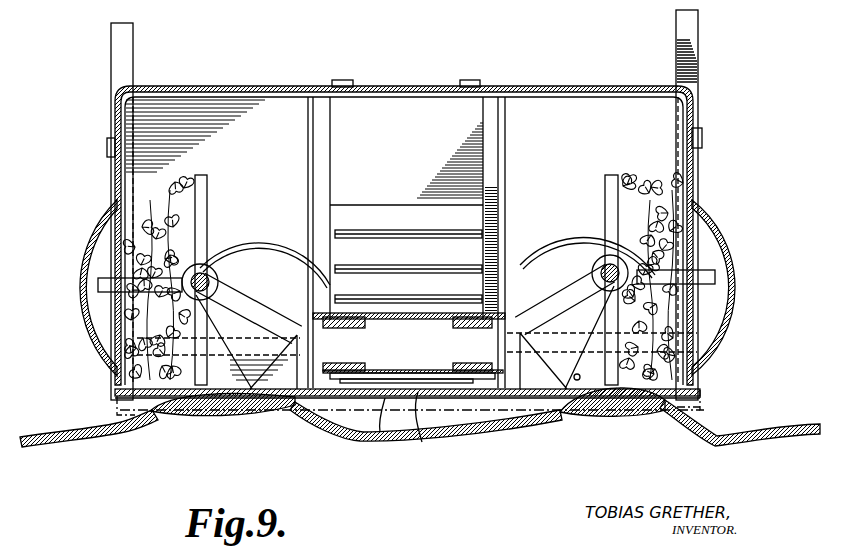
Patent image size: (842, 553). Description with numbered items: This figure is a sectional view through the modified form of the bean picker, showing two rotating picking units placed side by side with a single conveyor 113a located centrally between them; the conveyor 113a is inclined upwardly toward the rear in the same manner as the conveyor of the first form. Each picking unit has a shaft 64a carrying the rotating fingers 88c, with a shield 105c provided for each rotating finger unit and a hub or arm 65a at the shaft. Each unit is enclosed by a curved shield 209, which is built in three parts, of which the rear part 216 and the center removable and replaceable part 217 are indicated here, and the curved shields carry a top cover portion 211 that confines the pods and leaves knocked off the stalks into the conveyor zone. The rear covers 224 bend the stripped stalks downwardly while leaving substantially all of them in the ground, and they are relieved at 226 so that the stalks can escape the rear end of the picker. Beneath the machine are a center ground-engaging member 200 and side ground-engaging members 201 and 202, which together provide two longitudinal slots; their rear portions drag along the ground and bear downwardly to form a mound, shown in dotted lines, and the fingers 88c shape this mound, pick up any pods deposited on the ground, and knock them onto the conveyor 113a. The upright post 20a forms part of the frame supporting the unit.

The upright post 20a is at (690, 43).
The rear part 216 is at (703, 137).
The center removable and replaceable part 217 is at (200, 77).
The rear cover 224 is at (258, 127).
The top cover portion 211 is at (390, 90).
The conveyor 113a is at (388, 368).
The fingers 88c is at (250, 208).
The shield 105c is at (264, 250).
The left arm 65a is at (209, 293).
The shaft 64a is at (612, 286).
The relief 226 is at (577, 375).
The curved shield 209 is at (90, 290).
The side ground-engaging member 201 is at (118, 421).
The side ground-engaging member 202 is at (703, 393).
The center ground-engaging member 200 is at (380, 433).